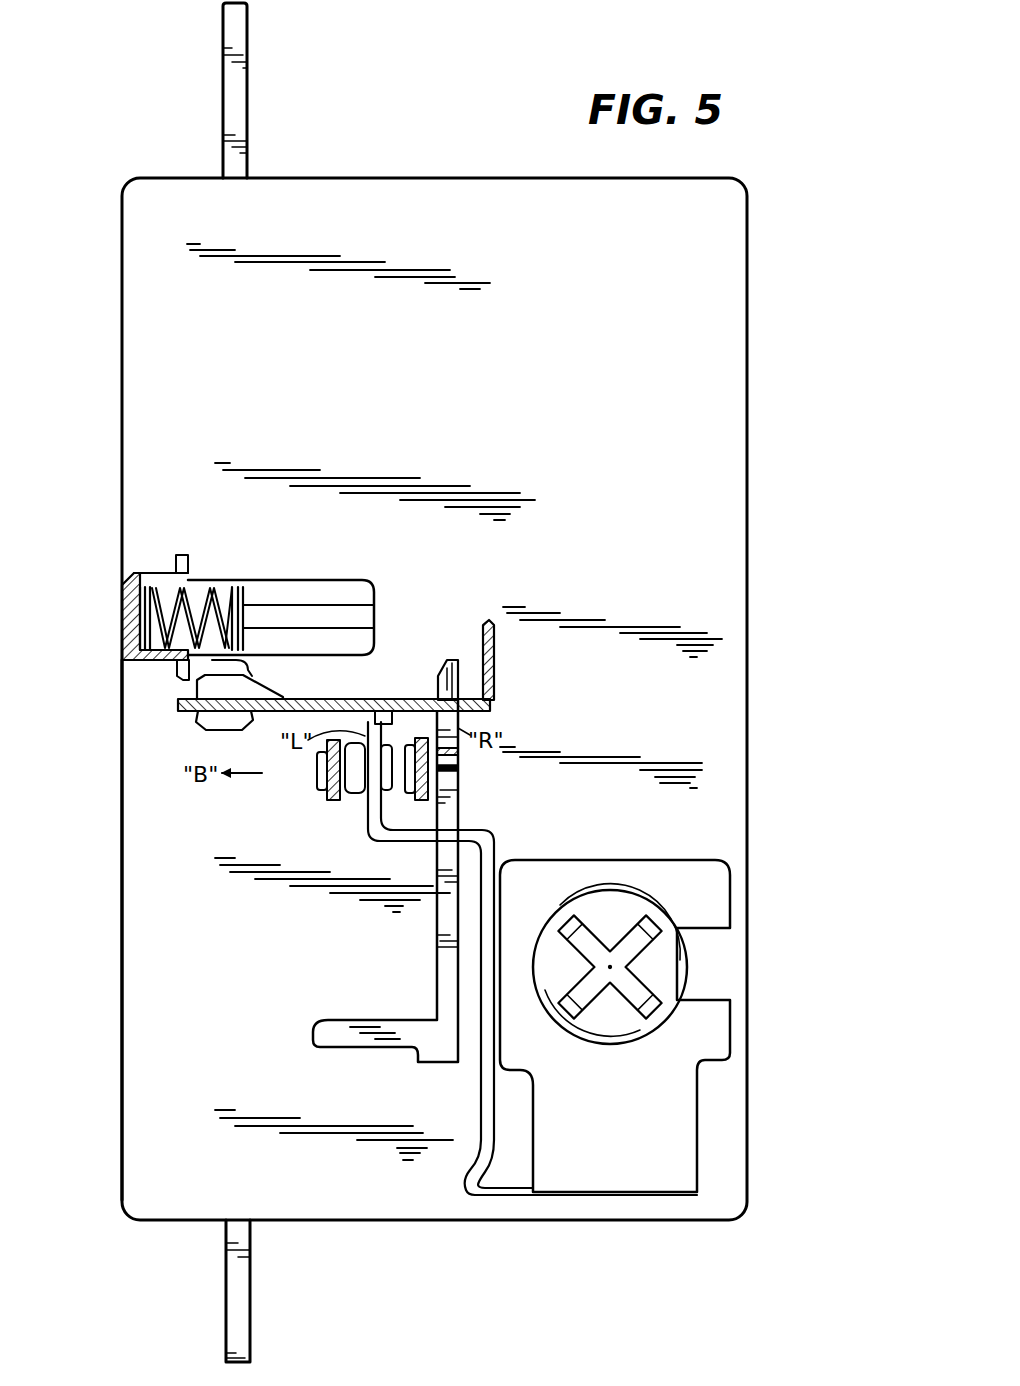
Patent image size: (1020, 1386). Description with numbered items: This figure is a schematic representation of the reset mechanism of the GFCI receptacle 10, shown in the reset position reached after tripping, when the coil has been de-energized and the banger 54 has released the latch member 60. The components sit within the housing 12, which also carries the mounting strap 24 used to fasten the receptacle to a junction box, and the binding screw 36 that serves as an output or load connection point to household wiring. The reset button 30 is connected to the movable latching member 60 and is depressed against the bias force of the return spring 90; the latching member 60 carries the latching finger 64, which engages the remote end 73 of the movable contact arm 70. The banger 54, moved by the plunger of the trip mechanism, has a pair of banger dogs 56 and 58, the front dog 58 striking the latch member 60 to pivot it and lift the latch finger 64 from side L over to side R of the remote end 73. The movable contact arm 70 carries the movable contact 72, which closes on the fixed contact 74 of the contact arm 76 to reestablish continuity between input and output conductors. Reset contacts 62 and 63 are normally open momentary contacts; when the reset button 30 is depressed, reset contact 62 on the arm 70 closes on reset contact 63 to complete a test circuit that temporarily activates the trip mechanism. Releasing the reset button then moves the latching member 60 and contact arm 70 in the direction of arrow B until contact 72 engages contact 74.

The GFCI receptacle 10 is at (467, 611).
The housing 12 is at (749, 610).
The mounting strap 24 is at (250, 1305).
The reset button 30 is at (124, 632).
The binding screw 36 is at (623, 1012).
The banger 54 is at (436, 938).
The banger dog 56 is at (453, 662).
The banger front dog 58 is at (460, 760).
The movable latching member 60 is at (496, 660).
The reset contact 62 is at (388, 798).
The reset contact 63 is at (412, 802).
The latching finger 64 is at (404, 701).
The movable contact arm 70 is at (490, 852).
The movable contact 72 is at (358, 797).
The remote end 73 is at (366, 700).
The fixed contact 74 is at (340, 802).
The contact arm 76 is at (316, 752).
The return spring 90 is at (125, 665).